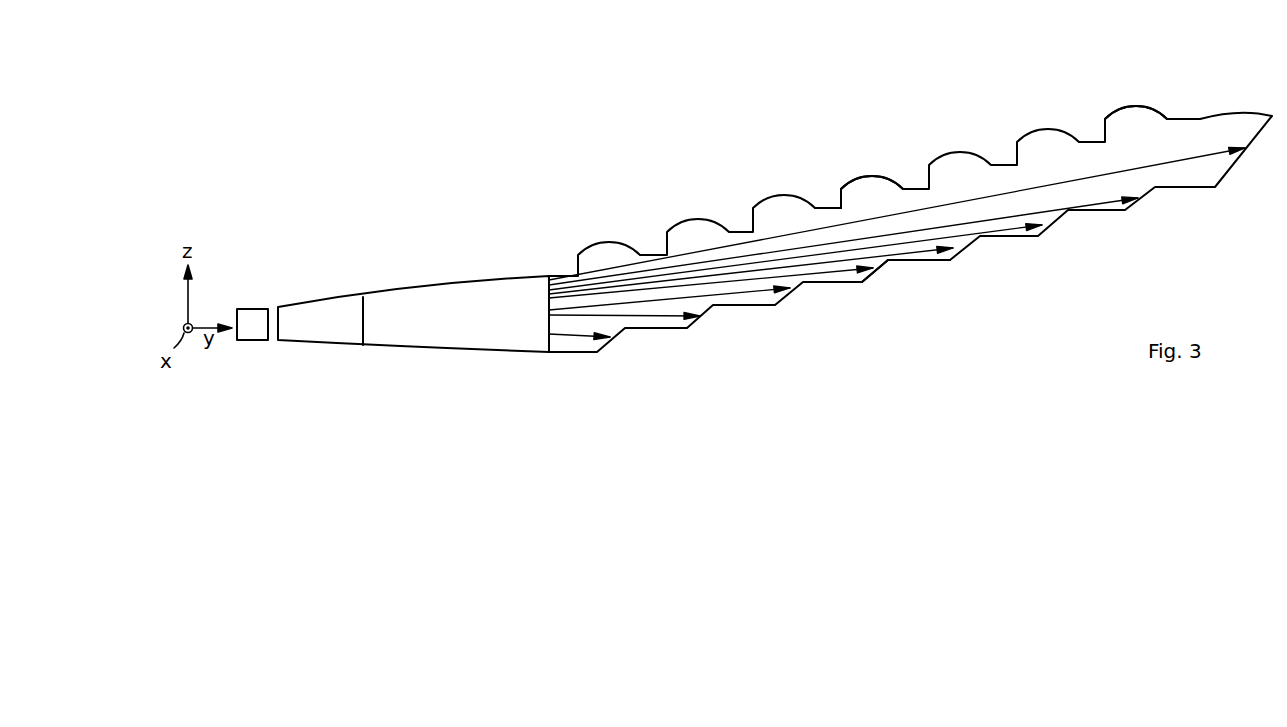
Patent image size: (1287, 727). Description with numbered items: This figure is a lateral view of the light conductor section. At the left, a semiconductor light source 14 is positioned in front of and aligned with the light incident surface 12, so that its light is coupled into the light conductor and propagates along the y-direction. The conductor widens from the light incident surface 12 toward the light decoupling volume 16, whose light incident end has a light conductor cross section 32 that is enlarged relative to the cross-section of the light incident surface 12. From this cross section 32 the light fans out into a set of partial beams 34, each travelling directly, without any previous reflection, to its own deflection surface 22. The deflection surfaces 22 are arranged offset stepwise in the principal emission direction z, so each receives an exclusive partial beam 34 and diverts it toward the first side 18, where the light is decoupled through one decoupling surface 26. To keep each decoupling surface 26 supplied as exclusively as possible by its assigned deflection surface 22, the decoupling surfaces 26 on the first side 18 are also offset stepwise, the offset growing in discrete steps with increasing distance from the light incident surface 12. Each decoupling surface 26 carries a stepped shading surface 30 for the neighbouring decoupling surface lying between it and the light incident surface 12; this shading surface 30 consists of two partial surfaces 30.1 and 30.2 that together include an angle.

The light incident surface 12 is at (277, 320).
The semiconductor light source 14 is at (252, 350).
The light decoupling volume 16 is at (1000, 207).
The first side 18 is at (910, 191).
The deflection surface 22 is at (878, 278).
The decoupling surface 26 is at (870, 178).
The shading surface 30 is at (1088, 130).
The partial surface 30.1 is at (825, 207).
The partial surface 30.2 is at (835, 205).
The light conductor cross section 32 is at (548, 312).
The partial beam 34 is at (575, 338).